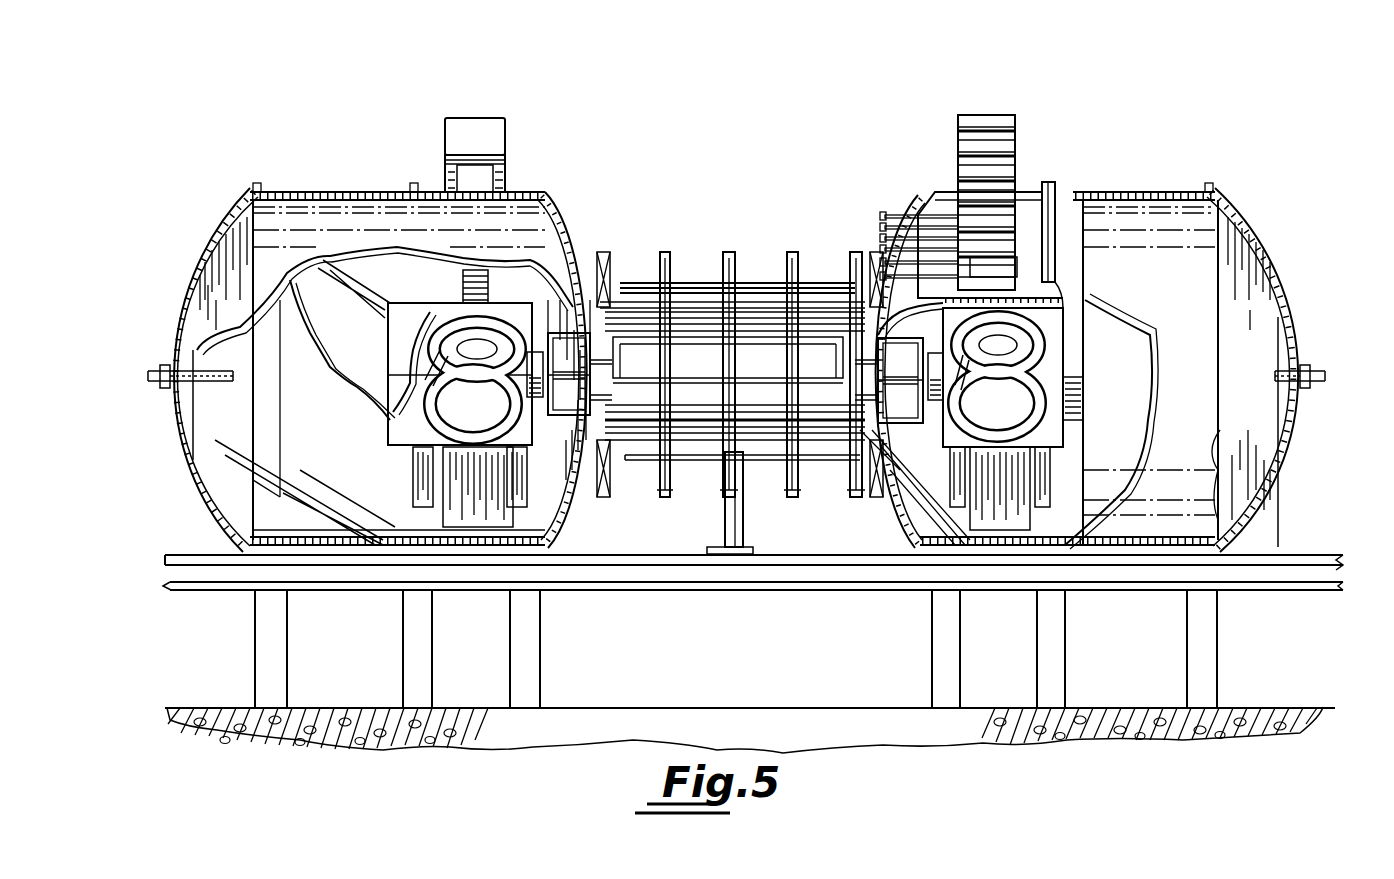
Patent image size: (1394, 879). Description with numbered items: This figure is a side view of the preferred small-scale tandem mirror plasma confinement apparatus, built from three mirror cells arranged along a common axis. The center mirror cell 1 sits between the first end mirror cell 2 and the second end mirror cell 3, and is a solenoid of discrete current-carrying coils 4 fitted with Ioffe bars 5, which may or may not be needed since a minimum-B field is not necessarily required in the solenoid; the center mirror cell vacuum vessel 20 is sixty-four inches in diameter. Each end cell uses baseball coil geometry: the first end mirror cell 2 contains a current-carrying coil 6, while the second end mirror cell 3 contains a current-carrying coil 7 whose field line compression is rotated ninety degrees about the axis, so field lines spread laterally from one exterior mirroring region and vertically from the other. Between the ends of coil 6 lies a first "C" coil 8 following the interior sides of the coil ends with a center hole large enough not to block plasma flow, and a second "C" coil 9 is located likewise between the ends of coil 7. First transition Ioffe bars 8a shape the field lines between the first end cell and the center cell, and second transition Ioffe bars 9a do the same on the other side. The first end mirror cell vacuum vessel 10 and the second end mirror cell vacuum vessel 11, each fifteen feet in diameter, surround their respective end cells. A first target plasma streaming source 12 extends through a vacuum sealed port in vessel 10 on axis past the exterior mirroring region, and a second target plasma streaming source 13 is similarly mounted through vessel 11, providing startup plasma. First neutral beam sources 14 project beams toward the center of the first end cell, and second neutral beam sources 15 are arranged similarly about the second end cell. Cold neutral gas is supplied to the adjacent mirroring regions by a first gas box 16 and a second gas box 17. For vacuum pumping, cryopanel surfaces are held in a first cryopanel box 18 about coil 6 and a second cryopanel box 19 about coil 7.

The center mirror cell 1 is at (855, 190).
The first end mirror cell 2 is at (585, 88).
The second end mirror cell 3 is at (1035, 82).
The current-carrying coils 4 is at (670, 252).
The Ioffe bars 5 is at (622, 457).
The current-carrying coil 6 is at (497, 322).
The current-carrying coil 7 is at (1067, 302).
The first "C" coil 8 is at (530, 407).
The first transition Ioffe bars 8a is at (590, 364).
The second "C" coil 9 is at (950, 348).
The second transition Ioffe bars 9a is at (885, 365).
The first end mirror cell vacuum vessel 10 is at (205, 243).
The second end mirror cell vacuum vessel 11 is at (1265, 245).
The first target plasma streaming source 12 is at (150, 383).
The second target plasma streaming source 13 is at (1318, 370).
The first neutral beam sources 14 is at (505, 152).
The second neutral beam sources 15 is at (1018, 137).
The first gas box 16 is at (542, 340).
The second gas box 17 is at (928, 418).
The first cryopanel box 18 is at (398, 455).
The second cryopanel box 19 is at (1052, 448).
The center mirror cell vacuum vessel 20 is at (773, 362).